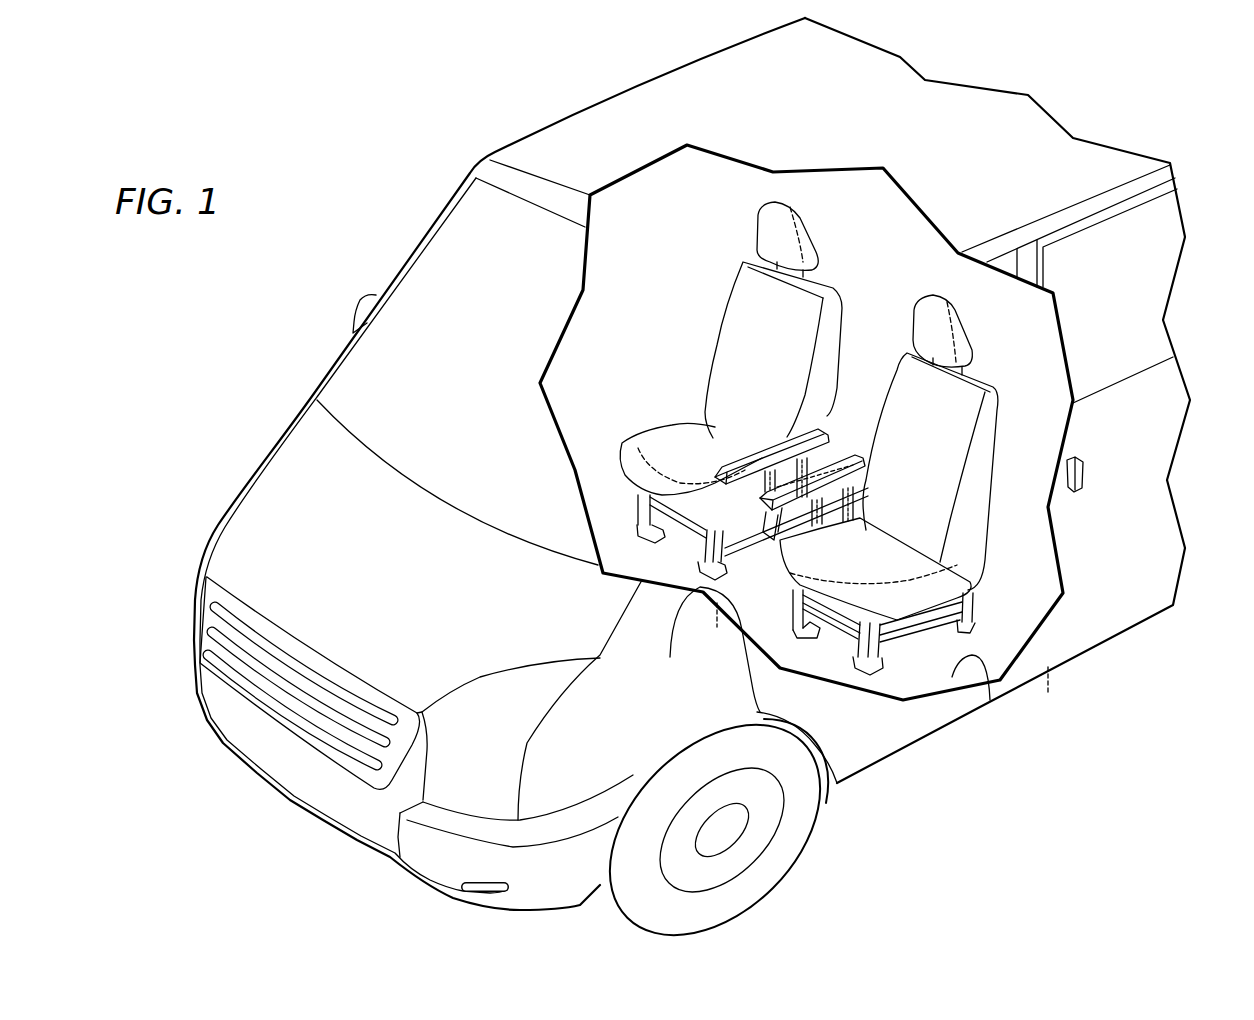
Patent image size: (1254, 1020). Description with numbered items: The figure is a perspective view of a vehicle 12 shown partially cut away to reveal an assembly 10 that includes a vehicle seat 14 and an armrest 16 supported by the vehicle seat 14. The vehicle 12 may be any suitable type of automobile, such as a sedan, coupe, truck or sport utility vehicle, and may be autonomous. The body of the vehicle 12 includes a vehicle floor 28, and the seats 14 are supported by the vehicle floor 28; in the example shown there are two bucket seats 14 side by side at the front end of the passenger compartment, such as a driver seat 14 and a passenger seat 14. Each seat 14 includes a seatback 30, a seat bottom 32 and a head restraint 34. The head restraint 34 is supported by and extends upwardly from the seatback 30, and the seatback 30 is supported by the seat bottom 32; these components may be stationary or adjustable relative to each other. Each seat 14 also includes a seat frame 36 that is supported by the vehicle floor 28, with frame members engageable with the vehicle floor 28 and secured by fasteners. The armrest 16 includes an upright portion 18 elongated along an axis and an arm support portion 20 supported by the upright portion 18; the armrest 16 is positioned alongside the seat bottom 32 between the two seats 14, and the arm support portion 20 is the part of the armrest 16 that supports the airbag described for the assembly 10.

The assembly 10 is at (788, 485).
The vehicle 12 is at (993, 68).
The vehicle seat 14 is at (788, 445).
The armrest 16 is at (751, 478).
The upright portion 18 is at (756, 489).
The arm support portion 20 is at (790, 437).
The vehicle floor 28 is at (990, 700).
The seatback 30 is at (833, 332).
The seat bottom 32 is at (637, 477).
The head restraint 34 is at (798, 235).
The seat frame 36 is at (700, 572).